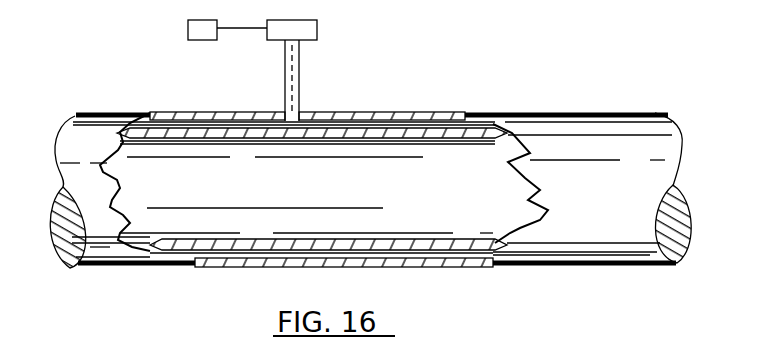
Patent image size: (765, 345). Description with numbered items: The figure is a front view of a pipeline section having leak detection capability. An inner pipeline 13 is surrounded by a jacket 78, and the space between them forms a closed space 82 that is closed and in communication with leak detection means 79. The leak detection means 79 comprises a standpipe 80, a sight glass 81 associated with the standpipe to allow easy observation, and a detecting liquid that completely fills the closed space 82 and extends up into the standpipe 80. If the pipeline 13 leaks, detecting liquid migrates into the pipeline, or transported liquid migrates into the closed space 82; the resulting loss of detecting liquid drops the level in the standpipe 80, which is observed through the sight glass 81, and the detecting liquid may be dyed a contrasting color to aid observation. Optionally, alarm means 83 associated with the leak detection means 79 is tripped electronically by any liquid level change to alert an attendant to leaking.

The pipeline 13 is at (247, 247).
The jacket 78 is at (407, 115).
The leak detection means 79 is at (318, 25).
The standpipe 80 is at (301, 80).
The sight glass 81 is at (273, 32).
The closed space 82 is at (204, 127).
The alarm means 83 is at (197, 31).